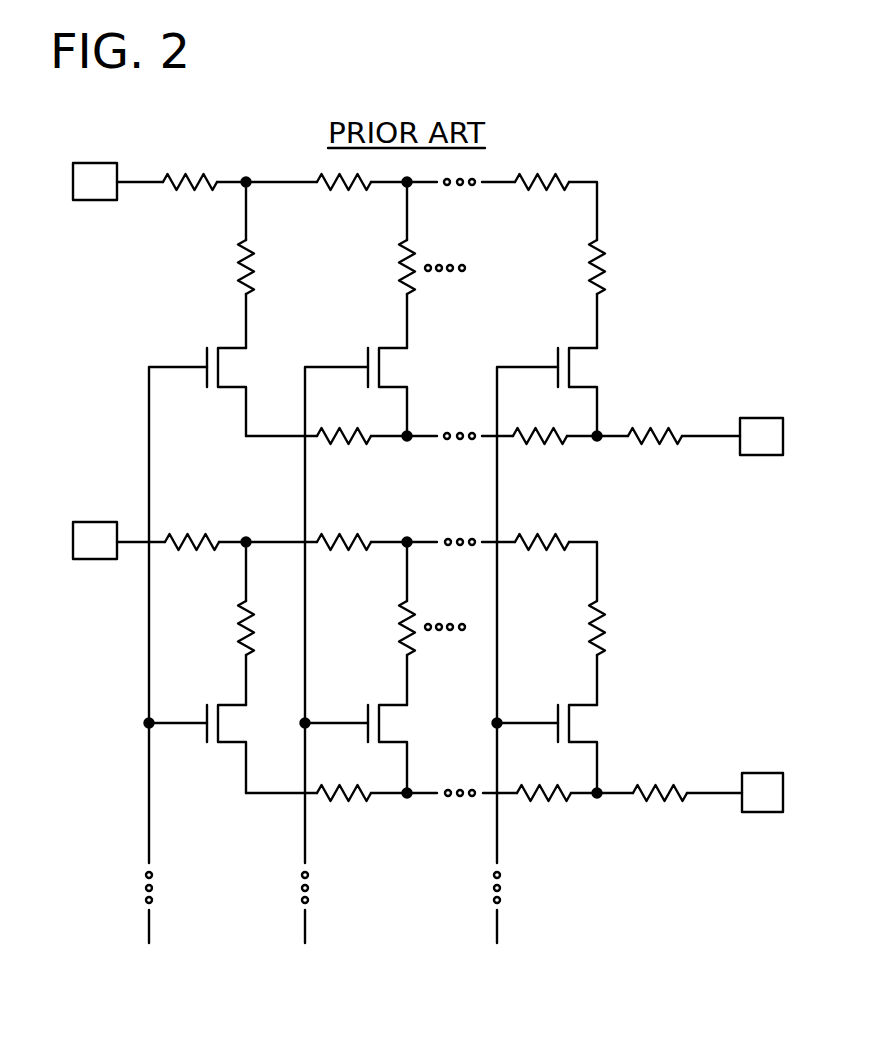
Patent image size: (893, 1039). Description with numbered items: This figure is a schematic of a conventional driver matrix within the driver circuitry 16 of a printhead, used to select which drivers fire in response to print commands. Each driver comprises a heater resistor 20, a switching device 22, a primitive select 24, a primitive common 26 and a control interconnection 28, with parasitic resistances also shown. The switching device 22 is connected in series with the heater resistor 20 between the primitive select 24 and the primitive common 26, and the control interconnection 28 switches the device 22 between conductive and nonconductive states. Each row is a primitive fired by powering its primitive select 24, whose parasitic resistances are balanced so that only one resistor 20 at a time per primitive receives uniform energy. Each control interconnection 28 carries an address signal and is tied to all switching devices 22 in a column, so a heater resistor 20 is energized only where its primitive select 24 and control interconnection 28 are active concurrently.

The driver circuitry 16 is at (130, 316).
The heater resistor 20 is at (238, 270).
The switching device 22 is at (235, 388).
The primitive select 24 is at (144, 182).
The primitive common 26 is at (707, 436).
The control interconnection 28 is at (150, 405).